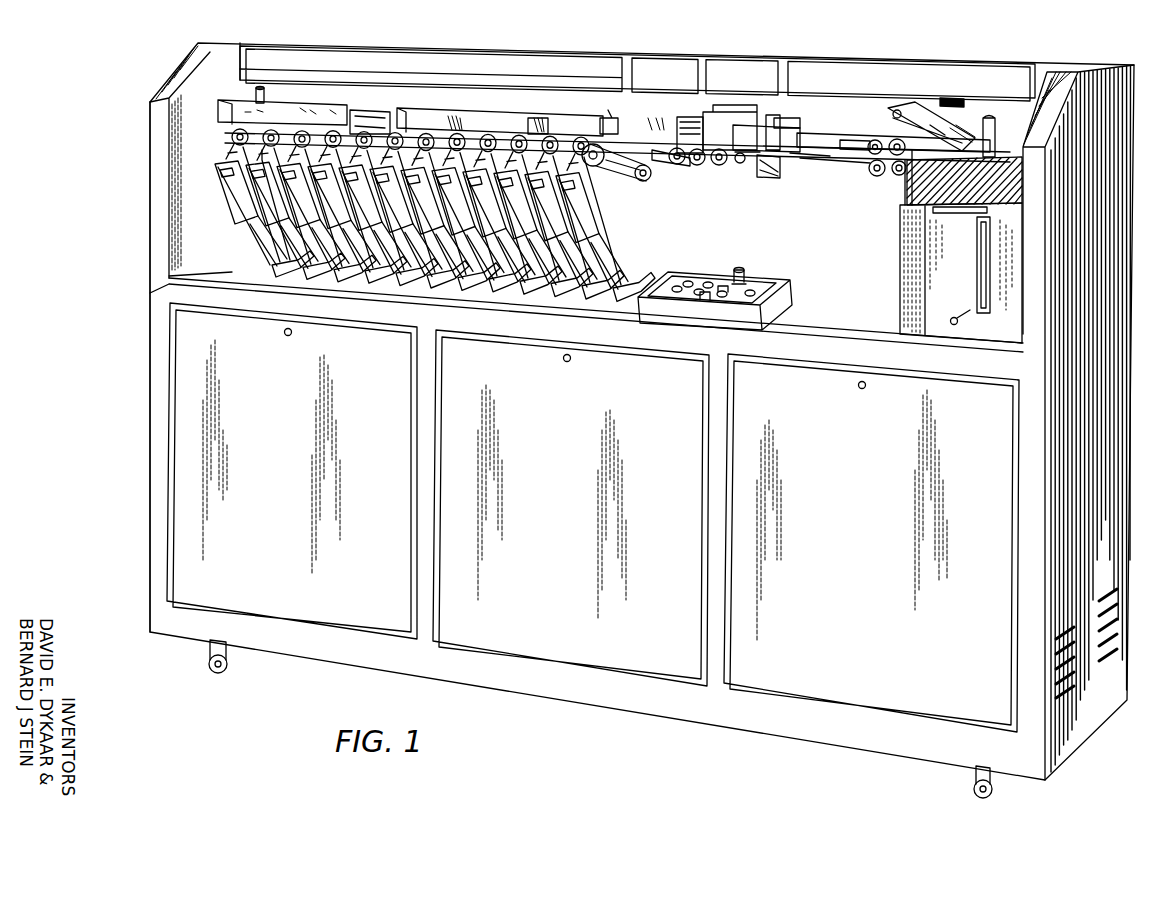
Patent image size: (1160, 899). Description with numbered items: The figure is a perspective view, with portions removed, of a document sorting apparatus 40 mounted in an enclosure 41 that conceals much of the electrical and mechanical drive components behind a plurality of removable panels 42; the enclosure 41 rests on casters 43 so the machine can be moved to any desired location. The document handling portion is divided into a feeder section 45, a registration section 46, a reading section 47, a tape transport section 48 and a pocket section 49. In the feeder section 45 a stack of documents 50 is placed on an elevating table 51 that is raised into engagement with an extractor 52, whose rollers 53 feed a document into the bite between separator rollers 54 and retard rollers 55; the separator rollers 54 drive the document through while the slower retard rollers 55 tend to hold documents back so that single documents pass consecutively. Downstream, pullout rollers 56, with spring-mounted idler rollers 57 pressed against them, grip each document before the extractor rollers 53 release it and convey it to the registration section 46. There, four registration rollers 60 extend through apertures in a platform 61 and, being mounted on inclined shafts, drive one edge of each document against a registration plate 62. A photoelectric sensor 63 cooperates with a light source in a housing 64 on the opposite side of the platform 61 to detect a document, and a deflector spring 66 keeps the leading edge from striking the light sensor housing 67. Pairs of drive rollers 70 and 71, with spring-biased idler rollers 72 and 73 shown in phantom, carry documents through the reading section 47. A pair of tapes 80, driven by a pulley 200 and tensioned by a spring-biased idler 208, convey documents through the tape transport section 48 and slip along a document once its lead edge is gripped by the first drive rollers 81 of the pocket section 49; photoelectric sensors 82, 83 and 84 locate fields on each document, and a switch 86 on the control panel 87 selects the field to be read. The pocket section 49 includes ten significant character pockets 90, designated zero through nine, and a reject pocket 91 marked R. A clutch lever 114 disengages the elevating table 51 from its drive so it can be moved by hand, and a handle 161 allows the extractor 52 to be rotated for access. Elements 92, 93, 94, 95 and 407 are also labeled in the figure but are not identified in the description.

The sorting apparatus 40 is at (88, 374).
The enclosure 41 is at (140, 298).
The removable panels 42 is at (393, 644).
The casters 43 is at (238, 678).
The feeder section 45 is at (954, 86).
The registration section 46 is at (909, 81).
The reading section 47 is at (742, 77).
The tape transport section 48 is at (665, 76).
The pocket section 49 is at (424, 74).
The stack of documents 50 is at (1020, 192).
The elevating table 51 is at (965, 228).
The extractor 52 is at (990, 128).
The extractor rollers 53 is at (908, 200).
The separator rollers 54 is at (918, 128).
The retard rollers 55 is at (894, 186).
The pullout rollers 56 is at (870, 180).
The idler rollers 57 is at (850, 170).
The registration rollers 60 is at (748, 174).
The platform 61 is at (836, 168).
The registration plate 62 is at (875, 140).
The photoelectric sensor 63 is at (808, 124).
The housing 64 is at (772, 170).
The deflector spring 66 is at (857, 122).
The light sensor housing 67 is at (770, 138).
The drive rollers 70 is at (730, 170).
The drive rollers 71 is at (697, 166).
The idler rollers 72 is at (760, 110).
The idler rollers 73 is at (708, 108).
The tapes 80 is at (674, 166).
The drive rollers 81 is at (452, 136).
The photoelectric sensor 82 is at (694, 110).
The photoelectric sensor 83 is at (660, 115).
The photoelectric sensor 84 is at (648, 115).
The switch 86 is at (746, 266).
The control panel 87 is at (800, 302).
The significant character pockets 90 is at (500, 302).
The reject pocket 91 is at (260, 252).
The head block 92 is at (395, 125).
The block 93 is at (536, 136).
The block 94 is at (610, 118).
The rail block 95 is at (400, 118).
The clutch lever 114 is at (956, 326).
The handle 161 is at (940, 132).
The pulley 200 is at (616, 173).
The spring-biased idler 208 is at (622, 175).
The switch 407 is at (706, 300).